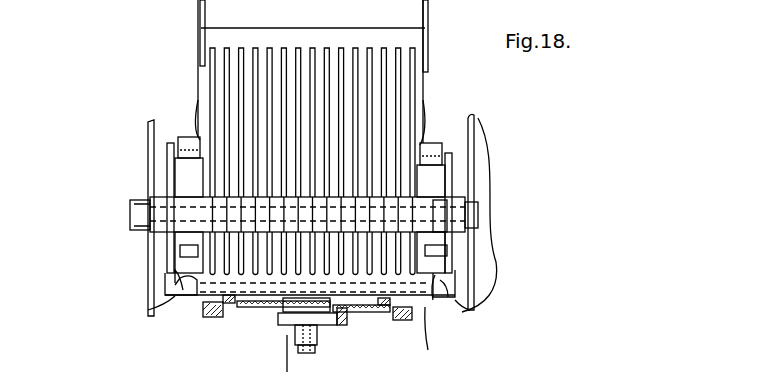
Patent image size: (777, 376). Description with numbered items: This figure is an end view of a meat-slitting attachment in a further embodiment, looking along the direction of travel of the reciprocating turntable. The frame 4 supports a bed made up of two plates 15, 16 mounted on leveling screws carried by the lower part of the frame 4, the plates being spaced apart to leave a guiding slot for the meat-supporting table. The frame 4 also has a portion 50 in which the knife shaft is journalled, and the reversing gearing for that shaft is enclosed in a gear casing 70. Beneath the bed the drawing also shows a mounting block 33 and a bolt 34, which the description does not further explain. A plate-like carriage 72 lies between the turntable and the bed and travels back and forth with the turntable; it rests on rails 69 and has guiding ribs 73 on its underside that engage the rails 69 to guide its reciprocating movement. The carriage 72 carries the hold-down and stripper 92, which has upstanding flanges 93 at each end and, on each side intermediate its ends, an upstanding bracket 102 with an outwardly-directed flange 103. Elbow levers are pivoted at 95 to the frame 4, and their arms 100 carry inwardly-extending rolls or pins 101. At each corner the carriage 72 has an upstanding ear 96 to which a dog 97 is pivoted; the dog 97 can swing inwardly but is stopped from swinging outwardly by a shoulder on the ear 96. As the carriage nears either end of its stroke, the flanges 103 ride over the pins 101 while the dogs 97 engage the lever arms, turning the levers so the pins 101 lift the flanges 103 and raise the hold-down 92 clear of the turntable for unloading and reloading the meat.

The frame 4 is at (473, 305).
The plate 15 is at (248, 308).
The plate 16 is at (367, 307).
The mounting block 33 is at (285, 318).
The bolt 34 is at (340, 323).
The frame portion 50 is at (149, 146).
The rail 69 is at (225, 310).
The gear casing 70 is at (483, 186).
The carriage 72 is at (439, 341).
The guiding rib 73 is at (234, 301).
The hold-down and stripper 92 is at (311, 35).
The upstanding flange 93 is at (200, 20).
The pivot 95 is at (150, 220).
The upstanding ear 96 is at (175, 285).
The dog 97 is at (168, 265).
The arm 100 is at (170, 161).
The roll or pin 101 is at (179, 138).
The upstanding bracket 102 is at (202, 137).
The outwardly-directed flange 103 is at (192, 138).